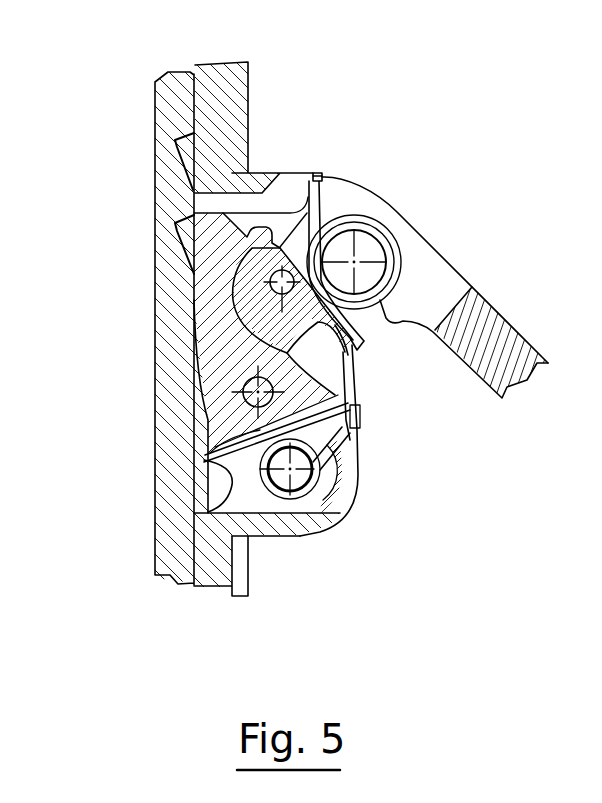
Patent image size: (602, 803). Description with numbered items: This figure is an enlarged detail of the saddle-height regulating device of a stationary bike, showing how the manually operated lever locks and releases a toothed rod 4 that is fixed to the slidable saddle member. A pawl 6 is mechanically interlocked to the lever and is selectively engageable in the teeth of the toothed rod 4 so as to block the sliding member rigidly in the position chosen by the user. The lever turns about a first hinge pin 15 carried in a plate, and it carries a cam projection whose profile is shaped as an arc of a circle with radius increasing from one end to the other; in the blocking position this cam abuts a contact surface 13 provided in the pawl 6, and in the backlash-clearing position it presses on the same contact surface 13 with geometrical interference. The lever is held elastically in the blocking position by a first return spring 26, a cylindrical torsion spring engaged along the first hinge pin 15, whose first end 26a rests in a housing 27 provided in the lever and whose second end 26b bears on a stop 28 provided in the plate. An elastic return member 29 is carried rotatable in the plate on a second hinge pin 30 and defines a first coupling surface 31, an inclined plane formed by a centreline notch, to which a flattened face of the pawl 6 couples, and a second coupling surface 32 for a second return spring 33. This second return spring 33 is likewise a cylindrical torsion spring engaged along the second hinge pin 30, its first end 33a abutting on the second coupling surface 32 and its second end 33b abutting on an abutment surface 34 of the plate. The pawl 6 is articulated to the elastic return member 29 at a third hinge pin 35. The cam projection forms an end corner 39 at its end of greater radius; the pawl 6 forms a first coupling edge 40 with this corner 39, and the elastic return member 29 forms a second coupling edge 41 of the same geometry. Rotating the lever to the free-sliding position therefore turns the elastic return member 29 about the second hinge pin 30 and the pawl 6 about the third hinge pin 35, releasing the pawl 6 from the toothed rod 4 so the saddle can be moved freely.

The toothed rod 4 is at (167, 168).
The pawl 6 is at (205, 303).
The contact surface 13 is at (225, 230).
The first hinge pin 15 is at (367, 247).
The first return spring 26 is at (452, 259).
The first end 26a is at (382, 313).
The second end 26b is at (318, 176).
The housing 27 is at (300, 306).
The stop 28 is at (307, 185).
The elastic return member 29 is at (243, 497).
The second hinge pin 30 is at (268, 496).
The first coupling surface 31 is at (205, 455).
The second coupling surface 32 is at (196, 512).
The second return spring 33 is at (282, 494).
The first end 33a is at (345, 413).
The second end 33b is at (353, 430).
The abutment surface 34 is at (338, 470).
The third hinge pin 35 is at (225, 432).
The end corner 39 is at (243, 392).
The first coupling edge 40 is at (330, 383).
The second coupling edge 41 is at (362, 348).